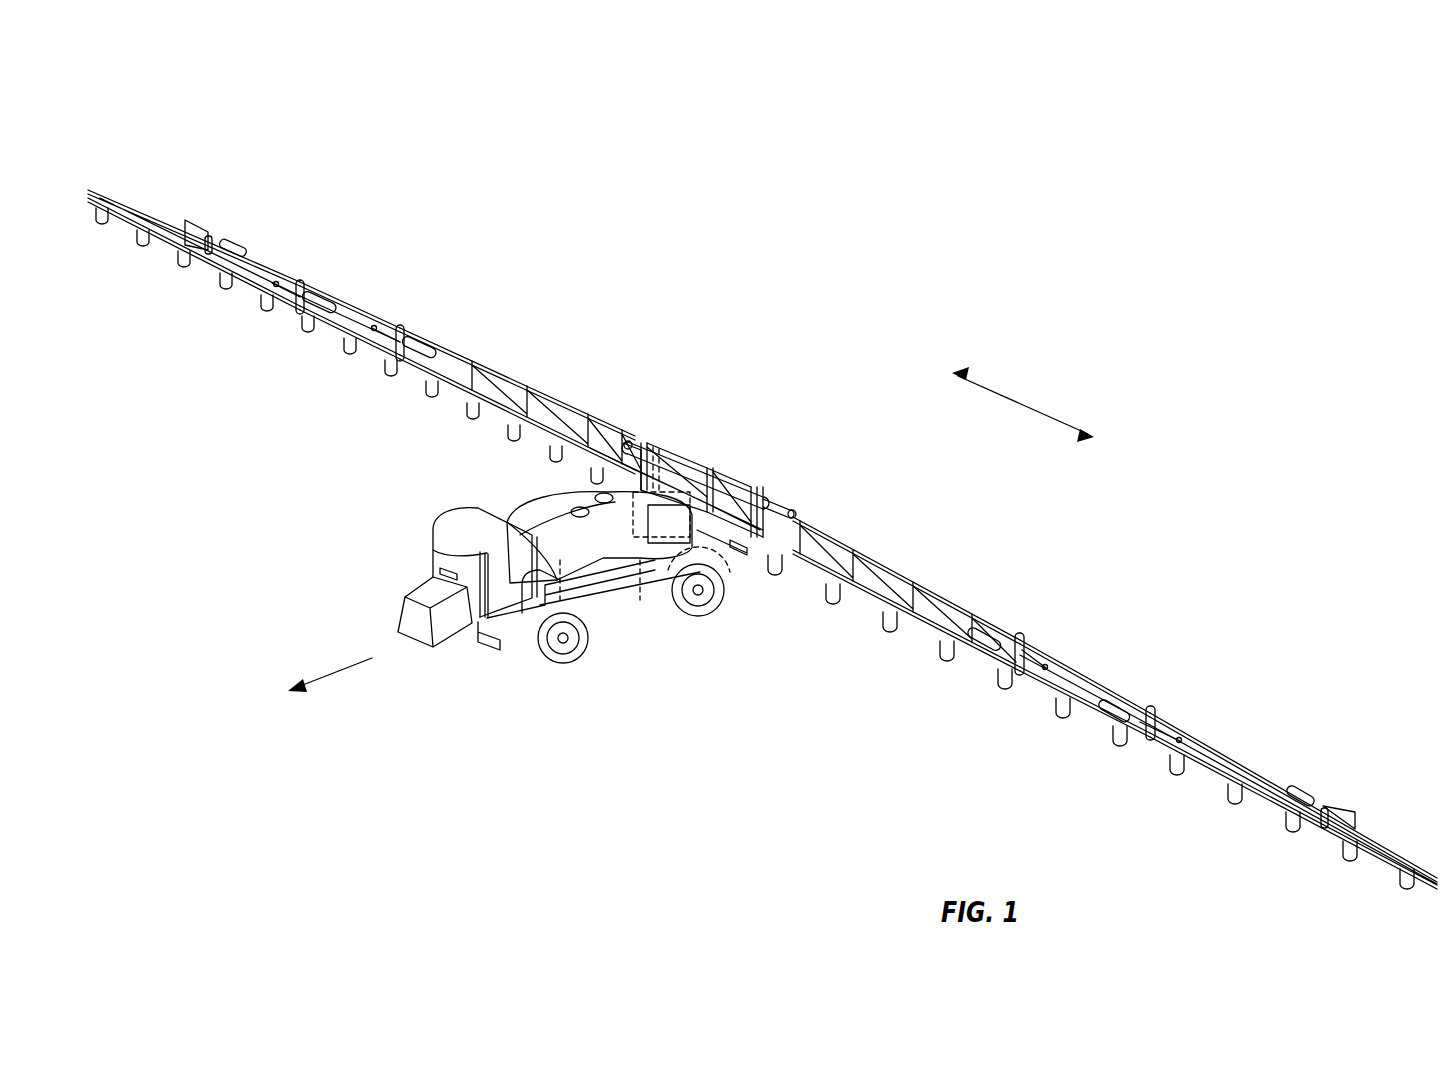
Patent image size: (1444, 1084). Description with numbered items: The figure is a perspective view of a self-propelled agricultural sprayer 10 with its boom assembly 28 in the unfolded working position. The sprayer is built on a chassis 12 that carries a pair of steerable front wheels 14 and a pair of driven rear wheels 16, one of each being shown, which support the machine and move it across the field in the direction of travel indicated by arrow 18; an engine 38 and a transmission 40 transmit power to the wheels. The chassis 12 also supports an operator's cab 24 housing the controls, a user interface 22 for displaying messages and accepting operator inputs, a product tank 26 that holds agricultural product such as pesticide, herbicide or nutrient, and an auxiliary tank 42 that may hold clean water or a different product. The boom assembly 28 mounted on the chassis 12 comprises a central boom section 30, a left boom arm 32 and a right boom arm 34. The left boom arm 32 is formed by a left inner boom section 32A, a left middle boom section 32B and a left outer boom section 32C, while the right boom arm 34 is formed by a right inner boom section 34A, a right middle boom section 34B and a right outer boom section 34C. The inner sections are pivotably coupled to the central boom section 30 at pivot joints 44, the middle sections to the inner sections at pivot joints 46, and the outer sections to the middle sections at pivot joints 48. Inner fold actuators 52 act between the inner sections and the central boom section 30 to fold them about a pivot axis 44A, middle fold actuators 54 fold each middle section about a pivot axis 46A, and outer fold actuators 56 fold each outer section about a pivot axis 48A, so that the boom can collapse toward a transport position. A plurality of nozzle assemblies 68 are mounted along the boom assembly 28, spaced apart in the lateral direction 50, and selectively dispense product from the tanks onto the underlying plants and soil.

The agricultural sprayer 10 is at (155, 172).
The chassis 12 is at (559, 603).
The front wheels 14 is at (556, 664).
The rear wheels 16 is at (697, 618).
The direction of travel 18 is at (338, 675).
The user interface 22 is at (438, 570).
The operator's cab 24 is at (455, 524).
The product tank 26 is at (525, 510).
The boom assembly 28 is at (828, 497).
The central boom section 30 is at (710, 497).
The left boom arm 32 is at (1127, 563).
The left inner boom section 32A is at (900, 570).
The left middle boom section 32B is at (1110, 690).
The left outer boom section 32C is at (1236, 760).
The right boom arm 34 is at (556, 277).
The right inner boom section 34A is at (520, 378).
The right middle boom section 34B is at (330, 306).
The right outer boom section 34C is at (290, 275).
The engine 38 is at (645, 572).
The transmission 40 is at (692, 562).
The auxiliary tank 42 is at (592, 495).
The pivot joints 44 is at (652, 444).
The pivot axis 44A is at (652, 442).
The pivot joints 46 is at (1024, 636).
The pivot axis 46A is at (345, 362).
The pivot joints 48 is at (304, 284).
The pivot axis 48A is at (266, 303).
The lateral direction 50 is at (1018, 400).
The inner fold actuators 52 is at (628, 440).
The middle fold actuators 54 is at (430, 356).
The outer fold actuators 56 is at (320, 333).
The nozzle assemblies 68 is at (430, 398).